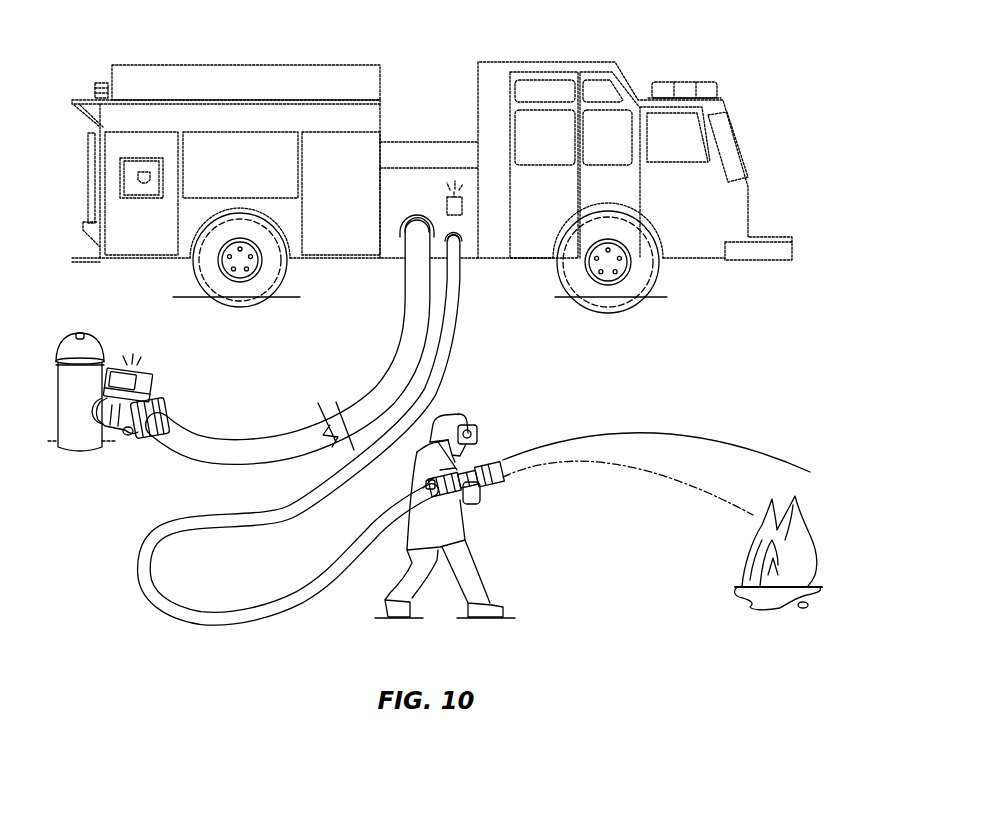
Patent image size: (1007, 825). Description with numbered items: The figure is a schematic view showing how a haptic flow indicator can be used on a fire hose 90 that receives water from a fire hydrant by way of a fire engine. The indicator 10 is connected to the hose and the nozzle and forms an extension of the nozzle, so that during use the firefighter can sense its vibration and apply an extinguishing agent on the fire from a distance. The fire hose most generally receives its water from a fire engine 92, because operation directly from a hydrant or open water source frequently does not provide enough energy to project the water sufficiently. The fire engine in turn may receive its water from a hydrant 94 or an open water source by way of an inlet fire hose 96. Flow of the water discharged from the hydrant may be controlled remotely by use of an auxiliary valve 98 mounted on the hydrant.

The indicator 10 is at (460, 515).
The fire hose 90 is at (221, 624).
The fire engine 92 is at (496, 72).
The hydrant 94 is at (70, 408).
The inlet fire hose 96 is at (247, 435).
The auxiliary valve 98 is at (133, 372).